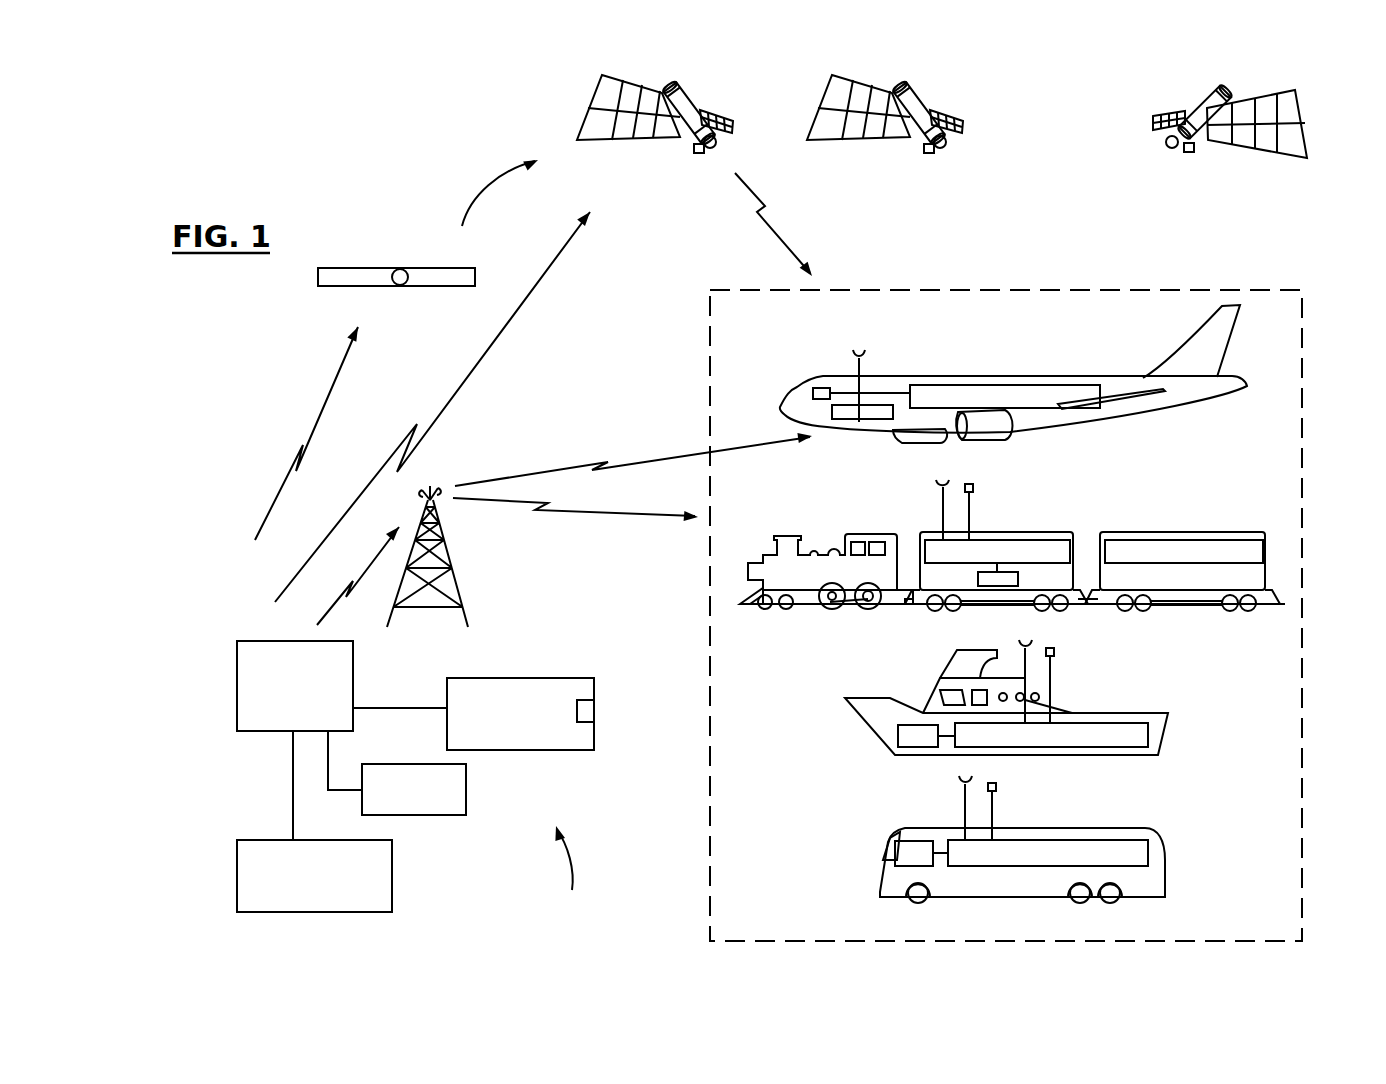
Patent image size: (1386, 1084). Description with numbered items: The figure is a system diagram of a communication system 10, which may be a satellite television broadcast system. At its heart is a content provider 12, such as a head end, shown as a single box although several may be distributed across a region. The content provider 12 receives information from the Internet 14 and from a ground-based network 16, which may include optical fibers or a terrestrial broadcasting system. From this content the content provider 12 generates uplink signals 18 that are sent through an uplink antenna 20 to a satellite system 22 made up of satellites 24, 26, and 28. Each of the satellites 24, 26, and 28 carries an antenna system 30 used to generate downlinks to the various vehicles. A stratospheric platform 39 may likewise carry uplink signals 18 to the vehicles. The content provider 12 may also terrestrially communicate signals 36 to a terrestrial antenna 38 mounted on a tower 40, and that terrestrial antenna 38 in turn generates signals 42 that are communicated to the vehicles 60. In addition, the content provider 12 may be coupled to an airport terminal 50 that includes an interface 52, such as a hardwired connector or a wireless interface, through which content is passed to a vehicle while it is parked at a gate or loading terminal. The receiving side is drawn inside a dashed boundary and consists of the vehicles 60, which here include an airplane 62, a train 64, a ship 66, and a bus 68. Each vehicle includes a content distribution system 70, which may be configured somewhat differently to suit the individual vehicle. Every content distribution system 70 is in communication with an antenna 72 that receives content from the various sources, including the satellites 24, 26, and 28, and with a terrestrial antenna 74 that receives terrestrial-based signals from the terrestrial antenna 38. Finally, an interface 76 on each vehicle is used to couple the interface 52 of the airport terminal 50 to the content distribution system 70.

The communication system 10 is at (570, 874).
The content provider 12 is at (353, 665).
The Internet 14 is at (466, 788).
The ground-based network 16 is at (392, 878).
The uplink signals 18 is at (452, 398).
The uplink antenna 20 is at (270, 618).
The satellite system 22 is at (495, 207).
The satellite 24 is at (692, 105).
The satellite 26 is at (922, 105).
The satellite 28 is at (1202, 102).
The antenna system 30 is at (699, 153).
The signals 36 is at (373, 576).
The terrestrial antenna 38 is at (431, 496).
The stratospheric platform 39 is at (400, 268).
The tower 40 is at (452, 552).
The signals 42 is at (670, 462).
The airport terminal 50 is at (522, 678).
The interface 52 is at (594, 712).
The vehicles 60 is at (1010, 290).
The airplane 62 is at (1150, 420).
The train 64 is at (865, 531).
The ship 66 is at (870, 697).
The bus 68 is at (878, 870).
The content distribution system 70 is at (928, 385).
The antenna 72 is at (852, 362).
The terrestrial antenna 74 is at (816, 391).
The interface 76 is at (858, 422).